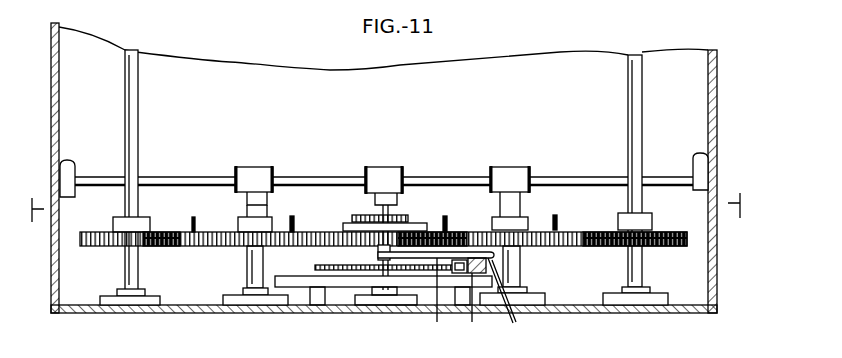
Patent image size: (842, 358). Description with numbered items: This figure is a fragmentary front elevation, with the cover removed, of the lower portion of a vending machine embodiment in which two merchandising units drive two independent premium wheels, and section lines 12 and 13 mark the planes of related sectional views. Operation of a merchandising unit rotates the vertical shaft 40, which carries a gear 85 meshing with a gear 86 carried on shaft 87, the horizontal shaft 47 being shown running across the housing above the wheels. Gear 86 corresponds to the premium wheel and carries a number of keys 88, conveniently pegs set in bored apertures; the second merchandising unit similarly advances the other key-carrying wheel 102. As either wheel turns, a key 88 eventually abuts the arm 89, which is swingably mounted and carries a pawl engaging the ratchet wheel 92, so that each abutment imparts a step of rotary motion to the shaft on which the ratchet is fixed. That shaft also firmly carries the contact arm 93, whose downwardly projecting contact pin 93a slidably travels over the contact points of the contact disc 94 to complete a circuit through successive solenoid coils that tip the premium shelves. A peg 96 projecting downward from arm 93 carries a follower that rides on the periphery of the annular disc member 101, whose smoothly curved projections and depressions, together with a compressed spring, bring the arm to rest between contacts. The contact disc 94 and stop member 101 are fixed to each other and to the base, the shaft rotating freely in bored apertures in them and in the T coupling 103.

The section line 12- 12 is at (390, 219).
The section line 13- 13 is at (459, 304).
The vertical shaft 40 is at (630, 139).
The drive shaft 47 is at (548, 176).
The gear 85 is at (665, 229).
The gear 86 is at (574, 229).
The shaft 87 is at (521, 210).
The keys 88 is at (342, 221).
The arm 89 is at (422, 223).
The ratchet wheel 92 is at (370, 215).
The contact arm 93 is at (454, 300).
The contact pin 93a is at (480, 275).
The contact disc 94 is at (413, 279).
The peg 96 is at (463, 259).
The annular disc member 101 is at (347, 268).
The key-carrying wheel 102 is at (215, 231).
The T coupling 103 is at (383, 176).